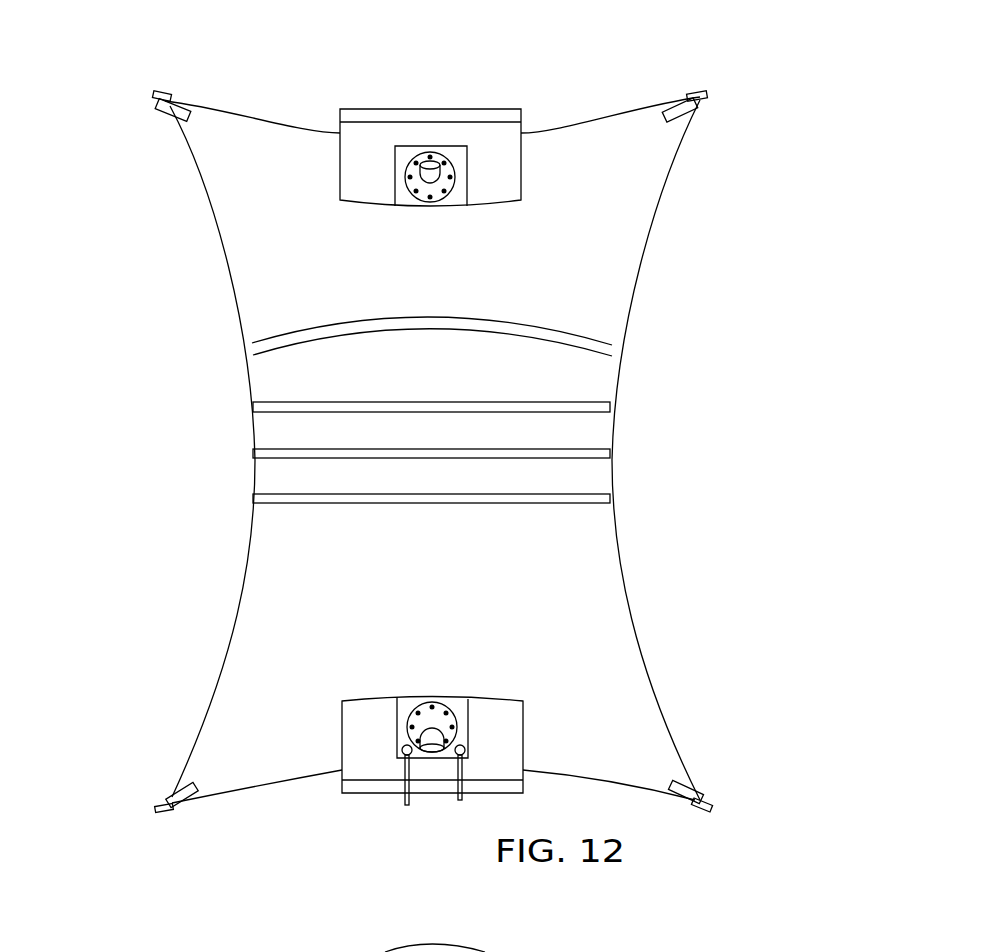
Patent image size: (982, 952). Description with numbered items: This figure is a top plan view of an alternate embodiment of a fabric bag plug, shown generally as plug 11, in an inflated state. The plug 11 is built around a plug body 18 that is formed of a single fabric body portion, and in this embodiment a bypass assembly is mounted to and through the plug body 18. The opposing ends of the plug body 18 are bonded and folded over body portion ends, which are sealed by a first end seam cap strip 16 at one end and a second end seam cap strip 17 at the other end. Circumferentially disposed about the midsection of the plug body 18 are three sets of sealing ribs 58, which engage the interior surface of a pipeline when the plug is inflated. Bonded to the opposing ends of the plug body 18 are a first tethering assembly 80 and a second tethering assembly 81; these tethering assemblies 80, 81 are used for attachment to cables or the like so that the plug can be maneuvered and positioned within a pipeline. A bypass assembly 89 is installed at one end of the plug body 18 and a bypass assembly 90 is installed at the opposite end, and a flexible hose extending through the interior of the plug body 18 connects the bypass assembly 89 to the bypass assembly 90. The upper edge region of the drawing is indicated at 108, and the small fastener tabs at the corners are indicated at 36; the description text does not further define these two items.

The plug 11 is at (658, 222).
The first end seam cap strip 16 is at (172, 118).
The second end seam cap strip 17 is at (180, 783).
The plug body 18 is at (273, 288).
The fastener tab 36 is at (157, 93).
The sealing ribs 58 is at (287, 446).
The first tethering assembly 80 is at (451, 102).
The second tethering assembly 81 is at (329, 780).
The bypass assembly 89 is at (456, 200).
The bypass assembly 90 is at (454, 699).
The upper edge 108 is at (571, 118).